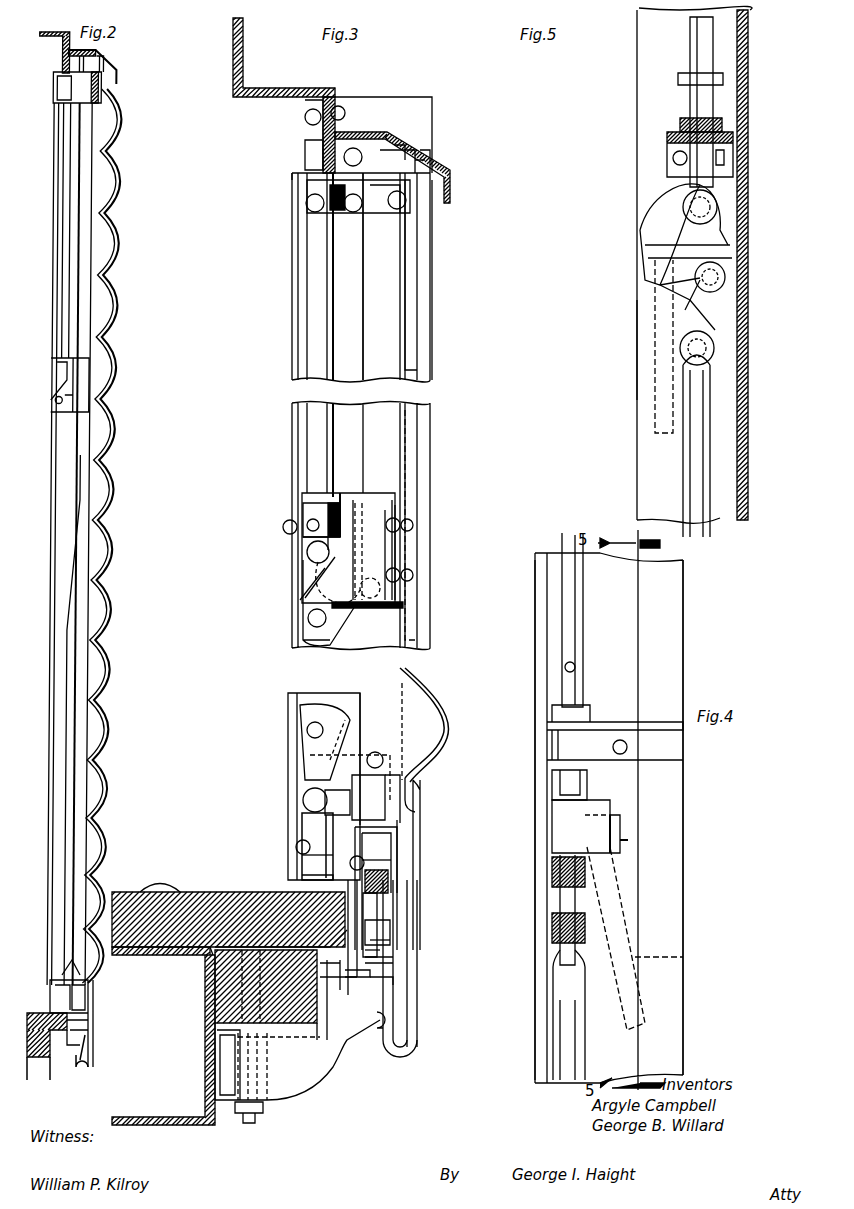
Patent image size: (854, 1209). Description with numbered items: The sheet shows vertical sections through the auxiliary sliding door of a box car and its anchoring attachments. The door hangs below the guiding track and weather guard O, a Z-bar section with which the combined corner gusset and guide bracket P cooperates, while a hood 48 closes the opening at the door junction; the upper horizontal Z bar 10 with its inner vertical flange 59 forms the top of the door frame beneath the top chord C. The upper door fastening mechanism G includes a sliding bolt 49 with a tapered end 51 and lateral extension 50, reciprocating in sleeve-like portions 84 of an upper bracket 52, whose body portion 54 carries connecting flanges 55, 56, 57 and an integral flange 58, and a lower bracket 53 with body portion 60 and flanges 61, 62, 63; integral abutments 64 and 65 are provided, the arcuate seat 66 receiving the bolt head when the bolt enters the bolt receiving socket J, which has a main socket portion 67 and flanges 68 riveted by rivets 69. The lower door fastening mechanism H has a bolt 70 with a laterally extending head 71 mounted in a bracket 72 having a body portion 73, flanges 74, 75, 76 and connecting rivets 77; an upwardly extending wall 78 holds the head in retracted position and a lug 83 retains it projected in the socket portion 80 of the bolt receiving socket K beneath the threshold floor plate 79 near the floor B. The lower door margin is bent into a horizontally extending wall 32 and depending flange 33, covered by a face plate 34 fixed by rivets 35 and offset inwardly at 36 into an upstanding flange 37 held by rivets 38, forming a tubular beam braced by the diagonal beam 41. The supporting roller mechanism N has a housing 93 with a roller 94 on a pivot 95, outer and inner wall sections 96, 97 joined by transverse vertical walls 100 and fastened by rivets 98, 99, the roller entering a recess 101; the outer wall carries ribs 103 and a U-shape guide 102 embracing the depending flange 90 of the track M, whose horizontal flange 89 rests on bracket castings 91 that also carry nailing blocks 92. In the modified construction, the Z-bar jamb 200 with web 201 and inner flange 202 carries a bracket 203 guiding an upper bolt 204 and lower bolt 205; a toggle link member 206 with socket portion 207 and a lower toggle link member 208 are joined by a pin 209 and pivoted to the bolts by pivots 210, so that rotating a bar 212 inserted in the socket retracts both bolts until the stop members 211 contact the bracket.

In FIG. 3, the upper horizontal Z bar 10 is at (440, 200).
In FIG. 2, the horizontally extending wall 32 is at (82, 1040).
In FIG. 3, the horizontally extending wall 32 is at (360, 930).
In FIG. 3, the depending flange 33 is at (395, 958).
In FIG. 3, the face plate 34 is at (392, 860).
In FIG. 3, the rivets 35 is at (345, 990).
In FIG. 3, the inward offset 36 is at (393, 835).
In FIG. 3, the upstanding flange 37 is at (402, 790).
In FIG. 3, the rivets 38 is at (388, 785).
In FIG. 2, the diagonal beam 41 is at (118, 860).
In FIG. 3, the diagonal beam 41 is at (440, 700).
In FIG. 3, the hood 48 is at (425, 165).
In FIG. 3, the sliding bolt 49 is at (320, 310).
In FIG. 3, the lateral extension 50 is at (310, 555).
In FIG. 3, the tapered end 51 is at (318, 143).
In FIG. 3, the upper bracket 52 is at (300, 185).
In FIG. 3, the lower bracket 53 is at (388, 497).
In FIG. 3, the body portion 54 is at (375, 210).
In FIG. 3, the connecting flange 55 is at (400, 210).
In FIG. 3, the connecting flange 56 is at (353, 212).
In FIG. 3, the connecting flange 57 is at (328, 200).
In FIG. 3, the integral flange 58 is at (390, 150).
In FIG. 3, the inner vertical flange 59 is at (397, 160).
In FIG. 3, the body portion 60 is at (345, 500).
In FIG. 3, the connecting flange 61 is at (392, 545).
In FIG. 3, the connecting flange 62 is at (300, 610).
In FIG. 3, the connecting flange 63 is at (302, 530).
In FIG. 3, the abutment 64 is at (305, 575).
In FIG. 3, the lower shelf 65 is at (403, 605).
In FIG. 3, the arcuate seat 66 is at (300, 598).
In FIG. 3, the main socket portion 67 is at (308, 163).
In FIG. 3, the flanges 68 is at (305, 114).
In FIG. 3, the rivets 69 is at (306, 127).
In FIG. 3, the bolt 70 is at (295, 775).
In FIG. 3, the laterally extending head 71 is at (333, 796).
In FIG. 3, the bracket 72 is at (300, 828).
In FIG. 3, the body portion 73 is at (300, 880).
In FIG. 3, the flange 74 is at (300, 860).
In FIG. 3, the flange 75 is at (318, 722).
In FIG. 3, the flange 76 is at (388, 885).
In FIG. 3, the connecting rivets 77 is at (303, 848).
In FIG. 3, the upwardly extending wall 78 is at (380, 765).
In FIG. 3, the threshold floor plate 79 is at (185, 885).
In FIG. 3, the socket portion 80 is at (332, 950).
In FIG. 3, the lug 83 is at (300, 740).
In FIG. 3, the sleeve-like portion 84 is at (322, 230).
In FIG. 3, the horizontal flange 89 is at (395, 985).
In FIG. 3, the depending flange 90 is at (385, 1025).
In FIG. 3, the bracket castings 91 is at (290, 1070).
In FIG. 3, the nailing blocks 92 is at (240, 995).
In FIG. 3, the housing 93 is at (378, 910).
In FIG. 3, the roller 94 is at (420, 890).
In FIG. 3, the pivot 95 is at (392, 930).
In FIG. 3, the outer wall section 96 is at (420, 855).
In FIG. 3, the inner wall section 97 is at (372, 973).
In FIG. 3, the rivets 98 is at (420, 795).
In FIG. 3, the rivets 99 is at (392, 940).
In FIG. 3, the transverse vertical walls 100 is at (382, 950).
In FIG. 3, the recess 101 is at (240, 950).
In FIG. 3, the U-shape guide 102 is at (395, 1055).
In FIG. 3, the ribs 103 is at (418, 1010).
In FIG. 5, the Z-bar jamb 200 is at (650, 330).
In FIG. 5, the web of the jamb 201 is at (740, 215).
In FIG. 4, the web of the jamb 201 is at (650, 817).
In FIG. 4, the inner flange 202 is at (536, 625).
In FIG. 5, the bracket 203 is at (667, 145).
In FIG. 4, the bracket 203 is at (600, 735).
In FIG. 5, the upper bolt 204 is at (697, 95).
In FIG. 4, the upper bolt 204 is at (575, 600).
In FIG. 5, the lower bolt 205 is at (693, 480).
In FIG. 4, the lower bolt 205 is at (565, 1020).
In FIG. 5, the toggle link member 206 is at (697, 300).
In FIG. 4, the toggle link member 206 is at (622, 848).
In FIG. 5, the socket portion 207 is at (648, 262).
In FIG. 5, the lower toggle link member 208 is at (683, 320).
In FIG. 4, the lower toggle link member 208 is at (570, 905).
In FIG. 5, the pin 209 is at (720, 277).
In FIG. 4, the pin 209 is at (555, 840).
In FIG. 4, the pivot 210 is at (585, 780).
In FIG. 4, the stop member 211 is at (575, 667).
In FIG. 5, the bar 212 is at (658, 412).
In FIG. 4, the bar 212 is at (653, 938).
In FIG. 3, the floor B is at (160, 910).
In FIG. 3, the upper top chord C is at (243, 75).
In FIG. 3, the upper door fastening mechanism G is at (307, 515).
In FIG. 3, the lower door fastening mechanism H is at (303, 800).
In FIG. 3, the bolt receiving socket J is at (305, 152).
In FIG. 3, the bolt receiving socket K is at (215, 955).
In FIG. 2, the track M is at (92, 1030).
In FIG. 2, the supporting roller mechanism N is at (96, 1010).
In FIG. 3, the supporting roller mechanism N is at (395, 935).
In FIG. 2, the guiding track and weather guard O is at (98, 56).
In FIG. 3, the guiding track and weather guard O is at (345, 100).
In FIG. 2, the combined corner gusset and guide bracket P is at (112, 90).
In FIG. 3, the combined corner gusset and guide bracket P is at (452, 172).